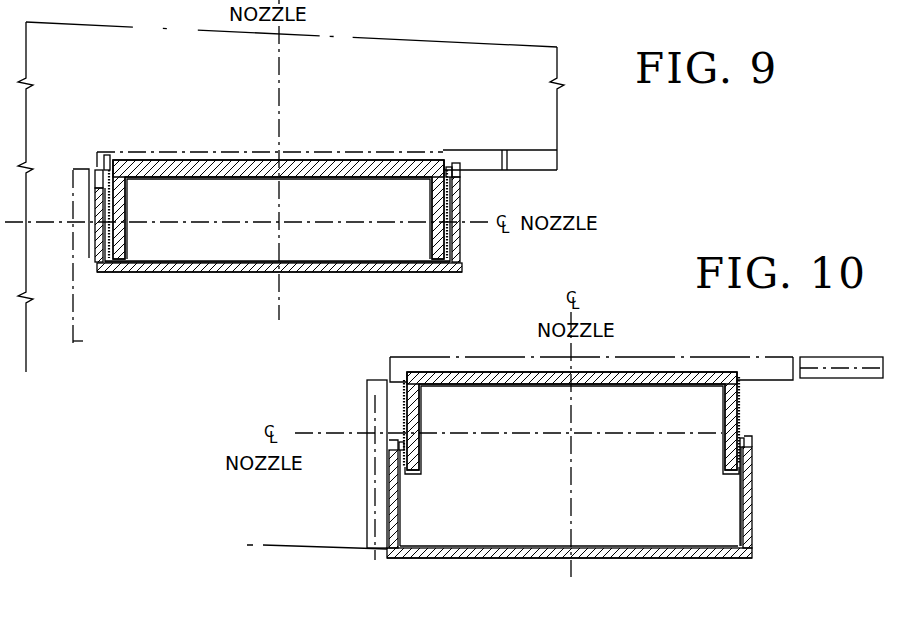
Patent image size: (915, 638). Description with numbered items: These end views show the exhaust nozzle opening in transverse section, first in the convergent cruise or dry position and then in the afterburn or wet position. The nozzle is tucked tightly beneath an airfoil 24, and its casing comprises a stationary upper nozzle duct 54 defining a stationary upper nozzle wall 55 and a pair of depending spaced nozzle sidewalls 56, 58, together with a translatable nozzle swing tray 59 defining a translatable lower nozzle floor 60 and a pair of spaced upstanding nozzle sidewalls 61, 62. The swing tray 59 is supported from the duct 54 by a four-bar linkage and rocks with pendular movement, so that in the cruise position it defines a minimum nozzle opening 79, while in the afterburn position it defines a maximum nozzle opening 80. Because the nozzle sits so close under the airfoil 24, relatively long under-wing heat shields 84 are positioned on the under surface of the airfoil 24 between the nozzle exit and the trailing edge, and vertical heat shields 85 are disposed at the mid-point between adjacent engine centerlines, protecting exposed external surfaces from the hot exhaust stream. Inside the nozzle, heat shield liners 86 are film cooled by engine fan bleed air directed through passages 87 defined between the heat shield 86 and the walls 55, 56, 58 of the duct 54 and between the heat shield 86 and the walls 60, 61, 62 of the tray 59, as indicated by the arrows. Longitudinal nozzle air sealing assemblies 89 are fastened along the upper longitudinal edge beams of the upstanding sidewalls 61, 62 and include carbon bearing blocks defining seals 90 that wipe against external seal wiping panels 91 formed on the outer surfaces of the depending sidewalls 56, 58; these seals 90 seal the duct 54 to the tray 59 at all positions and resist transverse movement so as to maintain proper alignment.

In FIG. 9, the airfoil 24 is at (423, 35).
In FIG. 9, the stationary upper nozzle duct 54 is at (226, 143).
In FIG. 10, the stationary upper nozzle duct 54 is at (521, 356).
In FIG. 9, the stationary upper nozzle wall 55 is at (333, 163).
In FIG. 10, the stationary upper nozzle wall 55 is at (652, 378).
In FIG. 9, the depending nozzle sidewall 56 is at (118, 212).
In FIG. 10, the depending nozzle sidewall 56 is at (419, 421).
In FIG. 9, the depending nozzle sidewall 58 is at (438, 198).
In FIG. 10, the depending nozzle sidewall 58 is at (736, 420).
In FIG. 9, the translatable nozzle swing tray 59 is at (262, 282).
In FIG. 10, the translatable nozzle swing tray 59 is at (518, 556).
In FIG. 9, the translatable lower nozzle floor 60 is at (326, 275).
In FIG. 10, the translatable lower nozzle floor 60 is at (644, 550).
In FIG. 9, the upstanding nozzle sidewall 61 is at (100, 270).
In FIG. 10, the upstanding nozzle sidewall 61 is at (400, 509).
In FIG. 9, the upstanding nozzle sidewall 62 is at (458, 255).
In FIG. 10, the upstanding nozzle sidewall 62 is at (752, 477).
In FIG. 9, the minimum nozzle opening 79 is at (388, 260).
In FIG. 10, the maximum nozzle opening 80 is at (740, 512).
In FIG. 9, the under-wing heat shield 84 is at (430, 152).
In FIG. 10, the under-wing heat shield 84 is at (755, 357).
In FIG. 9, the vertical heat shield 85 is at (84, 331).
In FIG. 10, the vertical heat shield 85 is at (368, 498).
In FIG. 9, the heat shield liner 86 is at (230, 182).
In FIG. 10, the heat shield liner 86 is at (402, 497).
In FIG. 9, the cooling air passage 87 is at (357, 180).
In FIG. 10, the cooling air passage 87 is at (740, 498).
In FIG. 9, the longitudinal nozzle air sealing assembly 89 is at (94, 164).
In FIG. 10, the longitudinal nozzle air sealing assembly 89 is at (388, 438).
In FIG. 9, the carbon bearing block seal 90 is at (107, 155).
In FIG. 10, the carbon bearing block seal 90 is at (400, 440).
In FIG. 9, the external seal wiping panel 91 is at (109, 200).
In FIG. 10, the external seal wiping panel 91 is at (404, 390).